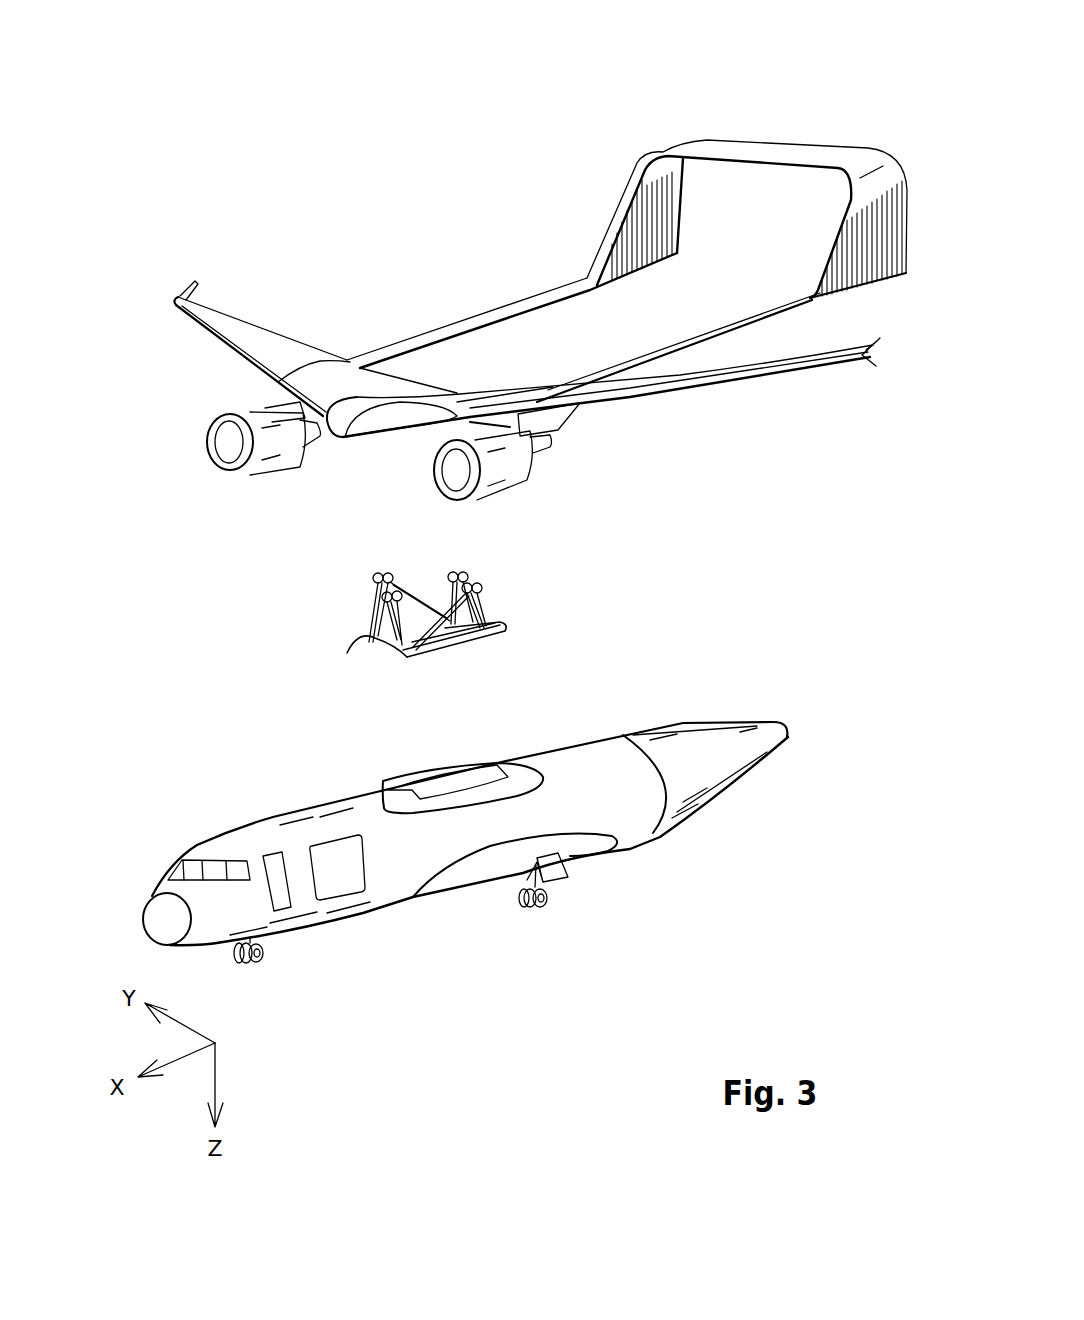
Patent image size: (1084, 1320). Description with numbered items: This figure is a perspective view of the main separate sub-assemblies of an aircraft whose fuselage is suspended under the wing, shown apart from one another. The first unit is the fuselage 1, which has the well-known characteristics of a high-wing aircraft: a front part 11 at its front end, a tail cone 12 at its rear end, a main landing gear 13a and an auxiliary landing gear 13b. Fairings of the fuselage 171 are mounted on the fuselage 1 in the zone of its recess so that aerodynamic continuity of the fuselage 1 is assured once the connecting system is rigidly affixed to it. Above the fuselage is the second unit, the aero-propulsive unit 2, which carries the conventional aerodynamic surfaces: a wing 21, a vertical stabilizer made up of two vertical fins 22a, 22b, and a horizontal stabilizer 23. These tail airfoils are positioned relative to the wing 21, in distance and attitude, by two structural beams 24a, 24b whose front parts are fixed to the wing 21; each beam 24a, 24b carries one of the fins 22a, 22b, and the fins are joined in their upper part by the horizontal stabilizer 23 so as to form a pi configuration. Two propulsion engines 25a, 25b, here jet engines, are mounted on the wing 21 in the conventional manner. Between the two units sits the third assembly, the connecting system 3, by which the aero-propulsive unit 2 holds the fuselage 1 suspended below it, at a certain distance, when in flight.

The fuselage 1 is at (262, 789).
The aero-propulsive unit 2 is at (452, 261).
The connecting system 3 is at (345, 609).
The front part 11 is at (210, 907).
The tail cone 12 is at (703, 757).
The main landing gear 13a is at (540, 902).
The auxiliary landing gear 13b is at (253, 965).
The fairings of the fuselage 171 is at (460, 777).
The wing 21 is at (249, 334).
The vertical fin 22a is at (632, 222).
The vertical fin 22b is at (867, 232).
The horizontal stabilizer 23 is at (752, 150).
The structural beam 24a is at (524, 300).
The structural beam 24b is at (727, 330).
The propulsion engine 25a is at (230, 420).
The propulsion engine 25b is at (508, 457).